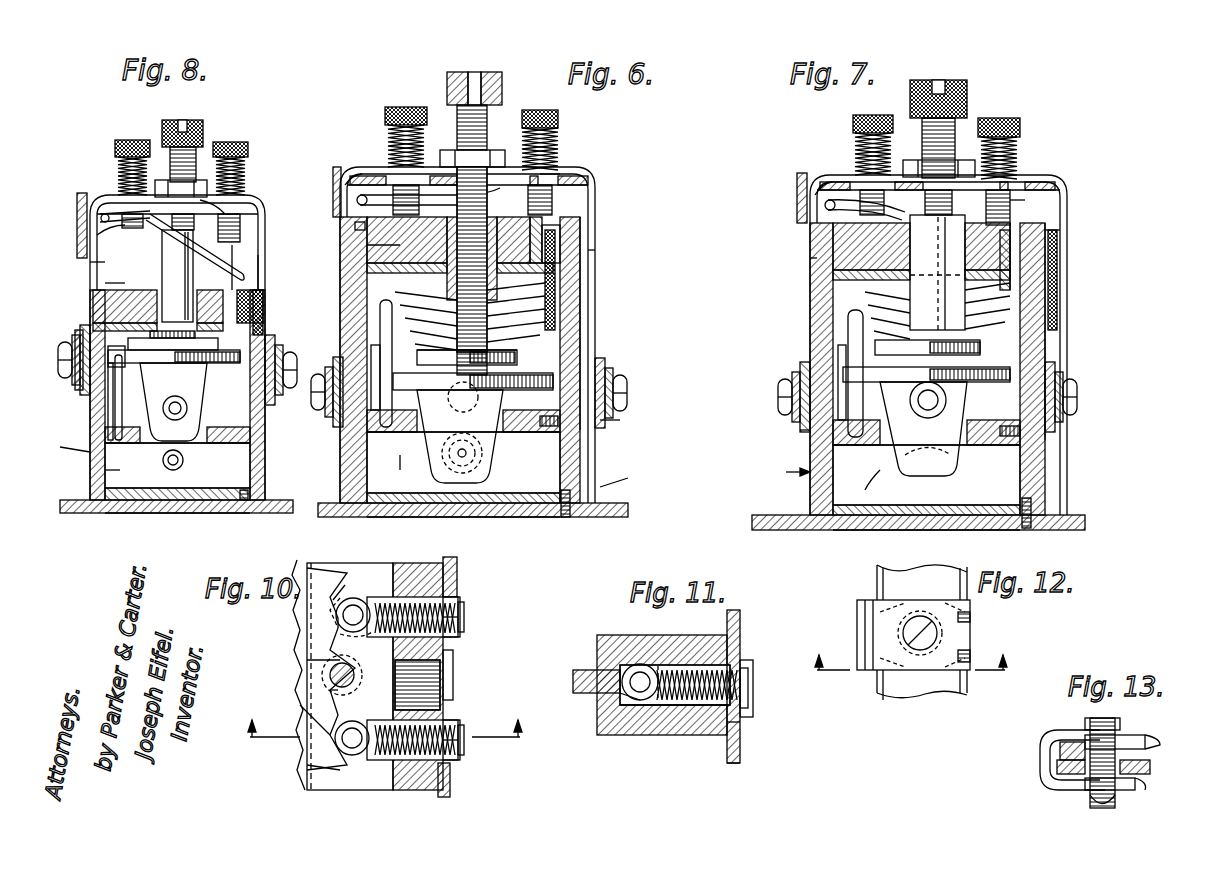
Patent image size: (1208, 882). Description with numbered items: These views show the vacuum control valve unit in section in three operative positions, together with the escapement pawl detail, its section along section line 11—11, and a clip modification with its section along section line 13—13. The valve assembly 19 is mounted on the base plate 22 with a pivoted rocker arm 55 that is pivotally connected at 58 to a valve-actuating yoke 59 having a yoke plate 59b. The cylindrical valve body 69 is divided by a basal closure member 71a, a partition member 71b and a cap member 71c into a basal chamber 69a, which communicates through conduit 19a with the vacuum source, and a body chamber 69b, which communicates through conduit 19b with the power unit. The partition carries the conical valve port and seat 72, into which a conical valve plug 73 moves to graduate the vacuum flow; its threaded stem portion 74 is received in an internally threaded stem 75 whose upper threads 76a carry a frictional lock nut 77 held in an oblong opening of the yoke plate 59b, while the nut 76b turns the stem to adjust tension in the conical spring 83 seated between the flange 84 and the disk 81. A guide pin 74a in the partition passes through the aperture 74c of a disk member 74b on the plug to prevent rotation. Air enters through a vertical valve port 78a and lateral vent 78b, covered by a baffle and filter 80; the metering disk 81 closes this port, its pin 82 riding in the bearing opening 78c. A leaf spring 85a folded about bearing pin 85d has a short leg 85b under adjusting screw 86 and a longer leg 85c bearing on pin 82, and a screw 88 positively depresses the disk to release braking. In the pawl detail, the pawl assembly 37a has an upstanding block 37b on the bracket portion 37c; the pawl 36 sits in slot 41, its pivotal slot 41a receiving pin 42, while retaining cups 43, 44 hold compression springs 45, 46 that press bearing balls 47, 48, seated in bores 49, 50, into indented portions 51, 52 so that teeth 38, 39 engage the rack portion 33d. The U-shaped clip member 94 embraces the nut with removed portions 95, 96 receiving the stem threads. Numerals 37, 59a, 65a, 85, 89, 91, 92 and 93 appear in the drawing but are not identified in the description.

In FIG. 10, the section line 11 is at (379, 755).
In FIG. 12, the section line 13 is at (917, 683).
In FIG. 8, the valve assembly 19 is at (85, 452).
In FIG. 6, the valve assembly 19 is at (598, 490).
In FIG. 7, the valve assembly 19 is at (787, 466).
In FIG. 8, the conduit 19a is at (178, 470).
In FIG. 6, the conduit 19a is at (488, 515).
In FIG. 7, the conduit 19a is at (928, 470).
In FIG. 8, the conduit 19b is at (225, 435).
In FIG. 6, the conduit 19b is at (478, 402).
In FIG. 7, the conduit 19b is at (938, 398).
In FIG. 8, the base plate 22 is at (248, 504).
In FIG. 6, the base plate 22 is at (600, 510).
In FIG. 7, the base plate 22 is at (790, 515).
In FIG. 10, the rack portion 33d is at (300, 644).
In FIG. 10, the pawl 36 is at (305, 660).
In FIG. 11, the pawl 36 is at (573, 680).
In FIG. 10, the detent body 37 is at (350, 676).
In FIG. 11, the detent body 37 is at (690, 635).
In FIG. 10, the pawl assembly 37a is at (455, 655).
In FIG. 11, the pawl assembly 37a is at (740, 730).
In FIG. 10, the upstanding block 37b is at (448, 560).
In FIG. 11, the upstanding block 37b is at (720, 682).
In FIG. 10, the upstanding bracket portion 37c is at (450, 790).
In FIG. 11, the upstanding bracket portion 37c is at (740, 760).
In FIG. 10, the tooth 38 is at (300, 616).
In FIG. 10, the tooth 39 is at (300, 705).
In FIG. 10, the slot 41 is at (338, 598).
In FIG. 11, the slot 41 is at (620, 670).
In FIG. 10, the pivotal slot 41a is at (330, 688).
In FIG. 10, the pin 42 is at (330, 675).
In FIG. 10, the retaining cup 43 is at (463, 605).
In FIG. 11, the retaining cup 43 is at (753, 665).
In FIG. 10, the retaining cup 44 is at (460, 765).
In FIG. 10, the compression spring 45 is at (462, 625).
In FIG. 11, the compression spring 45 is at (740, 690).
In FIG. 10, the compression spring 46 is at (463, 725).
In FIG. 10, the bearing ball 47 is at (375, 598).
In FIG. 11, the bearing ball 47 is at (655, 735).
In FIG. 10, the bearing ball 48 is at (352, 758).
In FIG. 10, the bore 49 is at (355, 598).
In FIG. 11, the bore 49 is at (600, 636).
In FIG. 10, the bore 50 is at (380, 762).
In FIG. 10, the indented portion 51 is at (333, 600).
In FIG. 11, the indented portion 51 is at (600, 705).
In FIG. 10, the indented portion 52 is at (307, 770).
In FIG. 8, the rocker arm 55 is at (78, 335).
In FIG. 6, the rocker arm 55 is at (612, 418).
In FIG. 7, the rocker arm 55 is at (800, 430).
In FIG. 8, the pivotal connection 58 is at (68, 372).
In FIG. 6, the pivotal connection 58 is at (312, 390).
In FIG. 7, the pivotal connection 58 is at (778, 392).
In FIG. 7, the valve-actuating yoke 59 is at (810, 258).
In FIG. 8, the terminal plate 59a is at (90, 262).
In FIG. 6, the terminal plate 59a is at (596, 250).
In FIG. 12, the terminal plate 59a is at (920, 693).
In FIG. 13, the terminal plate 59a is at (1150, 767).
In FIG. 8, the yoke plate 59b is at (198, 212).
In FIG. 6, the yoke plate 59b is at (440, 176).
In FIG. 7, the yoke plate 59b is at (1010, 182).
In FIG. 7, the contact strip 65a is at (1062, 232).
In FIG. 8, the valve body 69 is at (92, 414).
In FIG. 6, the valve body 69 is at (580, 310).
In FIG. 7, the valve body 69 is at (810, 316).
In FIG. 8, the basal chamber 69a is at (200, 468).
In FIG. 6, the basal chamber 69a is at (540, 458).
In FIG. 7, the basal chamber 69a is at (995, 475).
In FIG. 8, the body chamber 69b is at (182, 408).
In FIG. 6, the body chamber 69b is at (580, 333).
In FIG. 7, the body chamber 69b is at (1010, 338).
In FIG. 8, the basal closure member 71a is at (105, 490).
In FIG. 6, the basal closure member 71a is at (528, 503).
In FIG. 7, the basal closure member 71a is at (905, 496).
In FIG. 8, the partition member 71b is at (105, 470).
In FIG. 6, the partition member 71b is at (412, 462).
In FIG. 7, the partition member 71b is at (872, 480).
In FIG. 8, the cap member 71c is at (105, 284).
In FIG. 6, the cap member 71c is at (367, 246).
In FIG. 7, the cap member 71c is at (833, 245).
In FIG. 8, the valve port and seat 72 is at (165, 463).
In FIG. 6, the valve port and seat 72 is at (490, 455).
In FIG. 7, the valve port and seat 72 is at (960, 412).
In FIG. 8, the valve plug 73 is at (200, 382).
In FIG. 6, the valve plug 73 is at (433, 478).
In FIG. 7, the valve plug 73 is at (958, 466).
In FIG. 6, the threaded stem portion 74 is at (430, 330).
In FIG. 8, the guide pin 74a is at (115, 400).
In FIG. 6, the guide pin 74a is at (380, 310).
In FIG. 7, the guide pin 74a is at (848, 318).
In FIG. 8, the disk member 74b is at (112, 350).
In FIG. 6, the disk member 74b is at (395, 373).
In FIG. 7, the disk member 74b is at (1010, 370).
In FIG. 8, the aperture 74c is at (265, 340).
In FIG. 6, the aperture 74c is at (372, 350).
In FIG. 7, the aperture 74c is at (838, 355).
In FIG. 8, the stem 75 is at (195, 240).
In FIG. 6, the stem 75 is at (482, 259).
In FIG. 7, the stem 75 is at (936, 259).
In FIG. 8, the threaded upper portion 76a is at (196, 150).
In FIG. 6, the threaded upper portion 76a is at (487, 120).
In FIG. 7, the threaded upper portion 76a is at (960, 130).
In FIG. 12, the threaded upper portion 76a is at (938, 633).
In FIG. 13, the threaded upper portion 76a is at (1092, 726).
In FIG. 8, the nut 76b is at (190, 130).
In FIG. 6, the nut 76b is at (495, 85).
In FIG. 7, the nut 76b is at (967, 95).
In FIG. 8, the lock nut 77 is at (160, 182).
In FIG. 6, the lock nut 77 is at (490, 150).
In FIG. 7, the lock nut 77 is at (960, 160).
In FIG. 8, the vertical valve port 78a is at (237, 288).
In FIG. 6, the vertical valve port 78a is at (568, 226).
In FIG. 7, the vertical valve port 78a is at (1050, 220).
In FIG. 8, the lateral vent 78b is at (258, 270).
In FIG. 6, the lateral vent 78b is at (596, 222).
In FIG. 7, the lateral vent 78b is at (1062, 252).
In FIG. 8, the vertical bearing opening 78c is at (245, 290).
In FIG. 6, the vertical bearing opening 78c is at (595, 185).
In FIG. 7, the vertical bearing opening 78c is at (985, 223).
In FIG. 8, the baffle and filter 80 is at (262, 312).
In FIG. 6, the baffle and filter 80 is at (588, 266).
In FIG. 7, the baffle and filter 80 is at (1057, 268).
In FIG. 8, the disk 81 is at (142, 290).
In FIG. 6, the disk 81 is at (370, 262).
In FIG. 7, the disk 81 is at (833, 275).
In FIG. 8, the pin 82 is at (230, 323).
In FIG. 6, the pin 82 is at (525, 273).
In FIG. 7, the pin 82 is at (1010, 240).
In FIG. 8, the conical spring 83 is at (195, 336).
In FIG. 6, the conical spring 83 is at (507, 342).
In FIG. 7, the conical spring 83 is at (937, 311).
In FIG. 8, the flange 84 is at (205, 352).
In FIG. 6, the flange 84 is at (478, 354).
In FIG. 7, the flange 84 is at (938, 344).
In FIG. 6, the cover 85 is at (355, 232).
In FIG. 8, the leaf spring 85a is at (150, 218).
In FIG. 6, the leaf spring 85a is at (428, 198).
In FIG. 7, the leaf spring 85a is at (865, 216).
In FIG. 8, the short leg 85b is at (97, 236).
In FIG. 6, the short leg 85b is at (362, 185).
In FIG. 7, the short leg 85b is at (812, 190).
In FIG. 6, the longer leg 85c is at (545, 180).
In FIG. 7, the longer leg 85c is at (1010, 186).
In FIG. 8, the bearing pin 85d is at (86, 195).
In FIG. 6, the bearing pin 85d is at (335, 190).
In FIG. 7, the bearing pin 85d is at (830, 205).
In FIG. 8, the adjusting screw 86 is at (115, 148).
In FIG. 6, the adjusting screw 86 is at (385, 117).
In FIG. 7, the adjusting screw 86 is at (858, 185).
In FIG. 8, the screw 88 is at (248, 152).
In FIG. 6, the screw 88 is at (558, 122).
In FIG. 7, the screw 88 is at (1020, 127).
In FIG. 8, the terminal lug 89 is at (235, 210).
In FIG. 6, the terminal lug 89 is at (565, 178).
In FIG. 7, the terminal lug 89 is at (1022, 201).
In FIG. 13, the clip tab 91 is at (1160, 744).
In FIG. 13, the clip tab 92 is at (1145, 786).
In FIG. 12, the clip 93 is at (900, 595).
In FIG. 13, the clip 93 is at (1060, 752).
In FIG. 12, the U-shaped clip member 94 is at (857, 606).
In FIG. 13, the U-shaped clip member 94 is at (1055, 733).
In FIG. 12, the removed portion 95 is at (970, 650).
In FIG. 13, the removed portion 95 is at (1130, 735).
In FIG. 12, the removed portion 96 is at (970, 616).
In FIG. 13, the removed portion 96 is at (1115, 800).